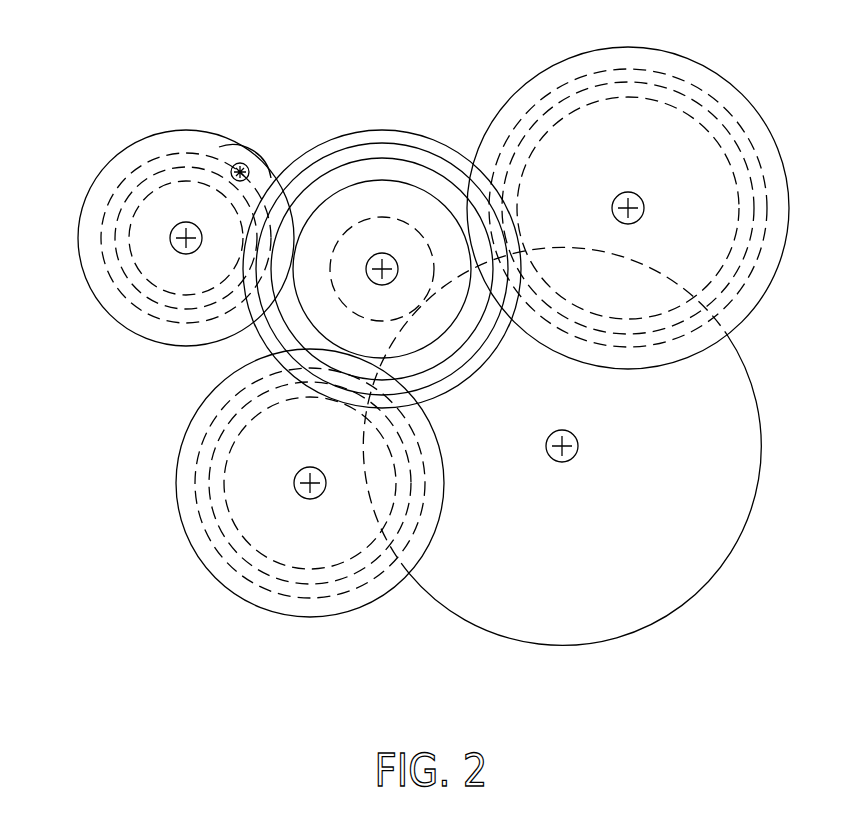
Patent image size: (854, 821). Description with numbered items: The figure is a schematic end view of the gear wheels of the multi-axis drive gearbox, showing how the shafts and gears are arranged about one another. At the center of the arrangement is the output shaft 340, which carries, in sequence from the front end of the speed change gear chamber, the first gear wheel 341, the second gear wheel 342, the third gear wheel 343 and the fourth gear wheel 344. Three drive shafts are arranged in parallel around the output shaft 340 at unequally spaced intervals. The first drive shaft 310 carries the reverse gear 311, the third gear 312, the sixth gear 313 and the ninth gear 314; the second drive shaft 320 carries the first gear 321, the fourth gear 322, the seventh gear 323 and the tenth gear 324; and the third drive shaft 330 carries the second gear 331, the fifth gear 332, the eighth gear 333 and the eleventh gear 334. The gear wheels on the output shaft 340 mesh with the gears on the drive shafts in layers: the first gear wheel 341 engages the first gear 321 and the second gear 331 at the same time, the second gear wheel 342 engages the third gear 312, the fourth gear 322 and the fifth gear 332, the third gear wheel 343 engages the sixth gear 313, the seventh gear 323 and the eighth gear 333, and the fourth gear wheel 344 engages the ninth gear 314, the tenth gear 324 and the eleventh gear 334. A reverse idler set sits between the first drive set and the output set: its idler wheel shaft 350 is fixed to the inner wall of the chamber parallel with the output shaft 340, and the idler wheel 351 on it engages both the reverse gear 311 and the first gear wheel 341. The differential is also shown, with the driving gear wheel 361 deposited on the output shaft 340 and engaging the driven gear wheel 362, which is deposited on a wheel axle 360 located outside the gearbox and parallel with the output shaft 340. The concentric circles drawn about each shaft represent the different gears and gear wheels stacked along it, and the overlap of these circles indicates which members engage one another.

The first drive shaft 310 is at (178, 223).
The reverse gear 311 is at (150, 290).
The third gear 312 is at (116, 262).
The sixth gear 313 is at (102, 216).
The ninth gear 314 is at (113, 157).
The second drive shaft 320 is at (295, 491).
The first gear 321 is at (251, 545).
The fourth gear 322 is at (275, 577).
The seventh gear 323 is at (370, 580).
The tenth gear 324 is at (323, 618).
The third drive shaft 330 is at (644, 208).
The second gear 331 is at (720, 143).
The fifth gear 332 is at (694, 98).
The eighth gear 333 is at (670, 72).
The eleventh gear 334 is at (593, 52).
The output shaft 340 is at (366, 270).
The first gear wheel 341 is at (382, 129).
The second gear wheel 342 is at (365, 143).
The third gear wheel 343 is at (338, 162).
The fourth gear wheel 344 is at (388, 180).
The idler wheel shaft 350 is at (233, 165).
The idler wheel 351 is at (252, 160).
The wheel axle 360 is at (578, 449).
The driving gear wheel 361 is at (412, 218).
The driven gear wheel 362 is at (682, 603).